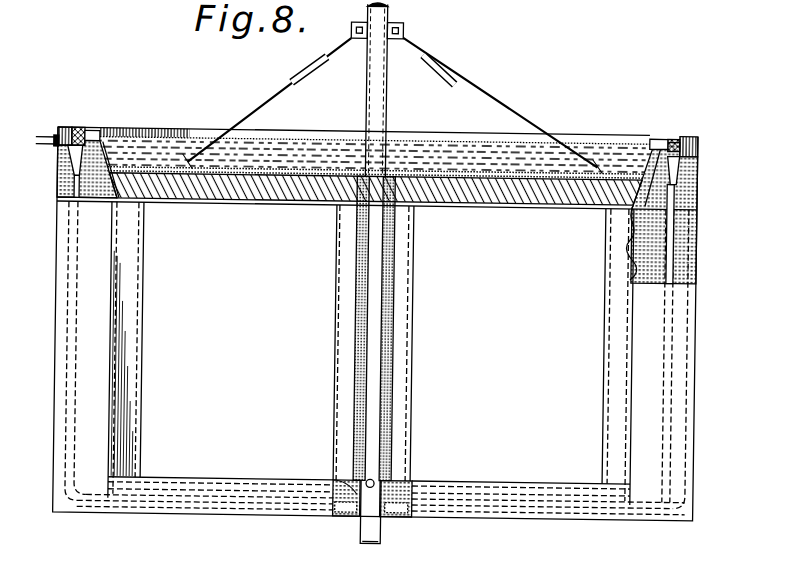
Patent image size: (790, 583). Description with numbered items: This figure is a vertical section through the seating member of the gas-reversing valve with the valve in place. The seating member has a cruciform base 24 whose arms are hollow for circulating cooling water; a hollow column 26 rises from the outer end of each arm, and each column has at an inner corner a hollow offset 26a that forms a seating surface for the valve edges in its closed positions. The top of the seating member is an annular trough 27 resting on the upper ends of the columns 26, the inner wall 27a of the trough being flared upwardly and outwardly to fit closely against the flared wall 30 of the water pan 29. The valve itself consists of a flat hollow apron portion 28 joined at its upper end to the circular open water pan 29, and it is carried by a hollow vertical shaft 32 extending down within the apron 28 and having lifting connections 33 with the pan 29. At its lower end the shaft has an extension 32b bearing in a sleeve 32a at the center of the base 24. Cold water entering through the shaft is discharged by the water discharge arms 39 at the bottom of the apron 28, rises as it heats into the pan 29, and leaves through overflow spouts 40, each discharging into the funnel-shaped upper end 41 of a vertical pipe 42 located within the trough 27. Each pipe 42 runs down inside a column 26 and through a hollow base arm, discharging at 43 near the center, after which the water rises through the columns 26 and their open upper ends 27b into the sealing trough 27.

The cruciform base 24 is at (234, 486).
The hollow column 26 is at (62, 382).
The hollow offset 26a is at (136, 326).
The annular trough 27 is at (689, 184).
The inner wall of the trough 27a is at (638, 174).
The open upper ends of the columns 27b is at (689, 204).
The apron portion 28 is at (396, 338).
The water pan 29 is at (556, 141).
The outwardly flared wall 30 is at (650, 140).
The vertical shaft 32 is at (384, 124).
The sleeve 32a is at (386, 540).
The extension 32b is at (371, 527).
The lifting connections 33 is at (250, 110).
The water discharge arms 39 is at (373, 485).
The overflow spouts 40 is at (80, 132).
The funnel-shaped upper end 41 is at (60, 170).
The vertical pipe 42 is at (80, 232).
The discharge 43 is at (400, 503).